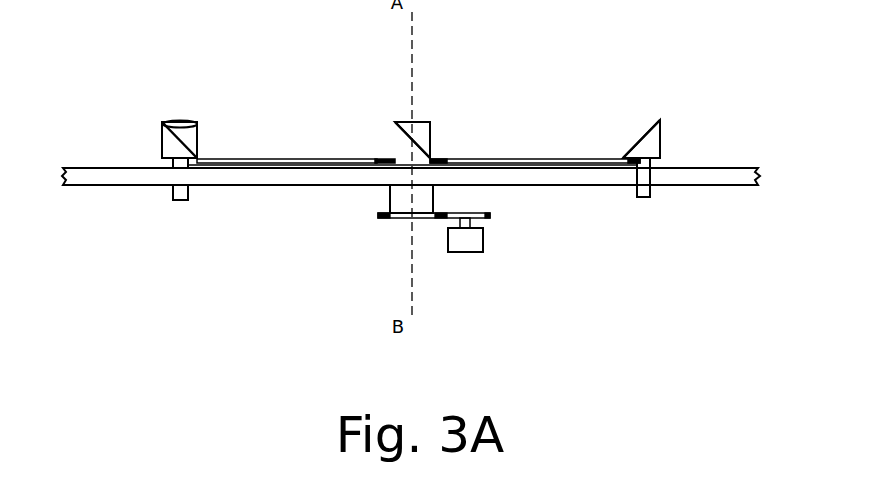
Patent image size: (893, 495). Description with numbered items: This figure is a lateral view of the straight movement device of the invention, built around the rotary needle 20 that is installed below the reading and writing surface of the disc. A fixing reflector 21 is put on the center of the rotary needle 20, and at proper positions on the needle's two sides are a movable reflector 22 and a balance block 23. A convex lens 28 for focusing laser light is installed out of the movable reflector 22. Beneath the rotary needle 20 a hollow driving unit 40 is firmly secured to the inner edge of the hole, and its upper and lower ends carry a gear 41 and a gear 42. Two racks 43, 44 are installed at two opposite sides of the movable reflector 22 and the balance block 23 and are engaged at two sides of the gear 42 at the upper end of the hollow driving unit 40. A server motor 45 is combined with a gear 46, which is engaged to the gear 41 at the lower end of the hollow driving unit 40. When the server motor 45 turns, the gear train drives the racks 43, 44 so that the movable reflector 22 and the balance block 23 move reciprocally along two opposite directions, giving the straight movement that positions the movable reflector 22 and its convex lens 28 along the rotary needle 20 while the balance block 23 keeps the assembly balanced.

The rotary needle 20 is at (693, 176).
The fixing reflector 21 is at (417, 128).
The movable reflector 22 is at (166, 142).
The balance block 23 is at (657, 139).
The convex lens 28 is at (176, 121).
The hollow driving unit 40 is at (427, 197).
The gear 41 is at (378, 215).
The gear 42 is at (380, 158).
The rack 43 is at (523, 158).
The rack 44 is at (318, 158).
The server motor 45 is at (458, 242).
The gear 46 is at (490, 218).